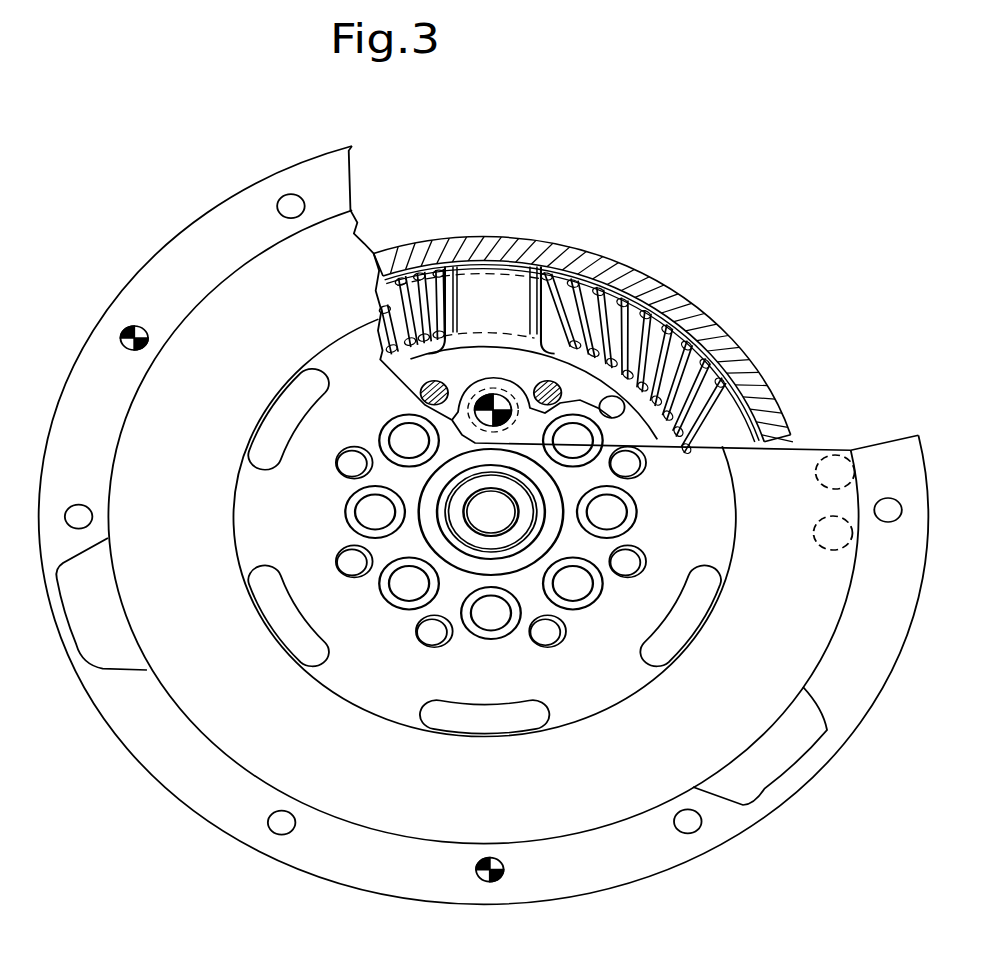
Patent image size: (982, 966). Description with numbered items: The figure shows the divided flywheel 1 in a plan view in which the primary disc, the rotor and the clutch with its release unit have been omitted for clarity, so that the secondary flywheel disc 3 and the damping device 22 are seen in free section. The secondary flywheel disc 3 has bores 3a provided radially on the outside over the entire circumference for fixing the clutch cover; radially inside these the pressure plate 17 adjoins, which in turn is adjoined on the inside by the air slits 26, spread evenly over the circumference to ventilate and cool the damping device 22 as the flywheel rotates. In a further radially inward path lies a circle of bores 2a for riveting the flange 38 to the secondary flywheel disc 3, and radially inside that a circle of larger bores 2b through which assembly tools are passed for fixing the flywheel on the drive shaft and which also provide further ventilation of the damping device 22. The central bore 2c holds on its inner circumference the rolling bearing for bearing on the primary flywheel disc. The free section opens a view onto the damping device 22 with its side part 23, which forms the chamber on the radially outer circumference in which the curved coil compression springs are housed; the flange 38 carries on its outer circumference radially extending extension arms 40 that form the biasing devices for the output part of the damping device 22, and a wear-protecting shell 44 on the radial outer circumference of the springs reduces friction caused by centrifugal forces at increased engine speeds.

The divided flywheel 1 is at (533, 126).
The bores 2a is at (750, 404).
The larger bores 2b is at (617, 510).
The central bore 2c is at (553, 543).
The secondary flywheel disc 3 is at (200, 200).
The bores for fixing the clutch cover 3a is at (290, 192).
The pressure plate 17 is at (800, 647).
The damping device 22 is at (737, 332).
The side part 23 is at (463, 252).
The air slits 26 is at (515, 727).
The flange 38 is at (584, 383).
The extension arms 40 is at (516, 286).
The wear-protecting shell 44 is at (577, 268).